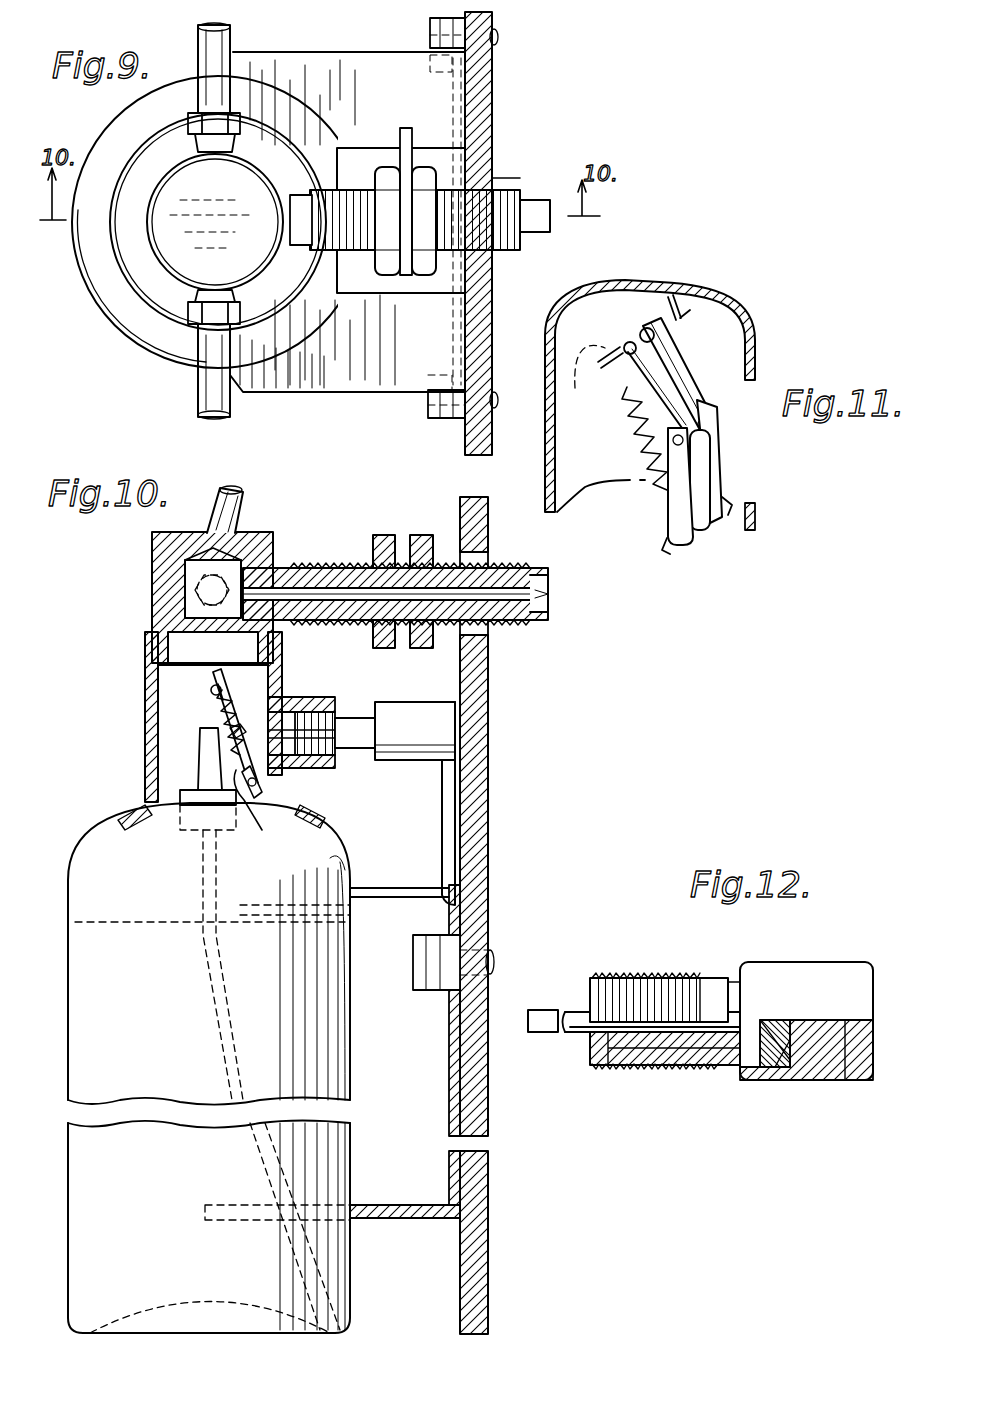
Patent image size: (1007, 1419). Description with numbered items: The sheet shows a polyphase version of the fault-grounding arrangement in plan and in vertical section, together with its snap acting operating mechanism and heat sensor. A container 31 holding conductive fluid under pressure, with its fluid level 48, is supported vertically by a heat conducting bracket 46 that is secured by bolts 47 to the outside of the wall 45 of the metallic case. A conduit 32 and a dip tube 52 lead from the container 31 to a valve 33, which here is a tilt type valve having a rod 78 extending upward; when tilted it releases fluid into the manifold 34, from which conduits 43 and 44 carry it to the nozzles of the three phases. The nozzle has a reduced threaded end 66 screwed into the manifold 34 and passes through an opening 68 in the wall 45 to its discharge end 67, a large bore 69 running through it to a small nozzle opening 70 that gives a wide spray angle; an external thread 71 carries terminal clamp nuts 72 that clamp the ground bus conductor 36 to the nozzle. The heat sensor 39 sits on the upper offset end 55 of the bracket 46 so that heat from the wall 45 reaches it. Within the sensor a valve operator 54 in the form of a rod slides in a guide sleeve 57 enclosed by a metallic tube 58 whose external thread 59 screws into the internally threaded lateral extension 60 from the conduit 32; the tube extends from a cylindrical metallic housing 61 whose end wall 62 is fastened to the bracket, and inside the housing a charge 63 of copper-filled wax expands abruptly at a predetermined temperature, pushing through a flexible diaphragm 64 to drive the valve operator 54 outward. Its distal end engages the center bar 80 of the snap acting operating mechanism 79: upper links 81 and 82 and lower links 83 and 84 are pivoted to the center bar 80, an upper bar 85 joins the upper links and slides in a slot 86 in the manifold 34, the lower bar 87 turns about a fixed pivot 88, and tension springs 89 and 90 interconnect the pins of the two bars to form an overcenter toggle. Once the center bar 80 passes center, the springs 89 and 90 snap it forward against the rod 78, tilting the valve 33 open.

In FIG. 9, the container 31 is at (108, 322).
In FIG. 10, the container 31 is at (142, 1224).
In FIG. 10, the conduit 32 is at (145, 764).
In FIG. 10, the valve 33 is at (172, 736).
In FIG. 9, the manifold 34 is at (212, 202).
In FIG. 10, the manifold 34 is at (152, 565).
In FIG. 9, the ground bus conductor 36 is at (406, 155).
In FIG. 10, the ground bus conductor 36 is at (400, 648).
In FIG. 10, the heat sensor 39 is at (350, 684).
In FIG. 12, the heat sensor 39 is at (656, 944).
In FIG. 9, the conduit 43 is at (198, 384).
In FIG. 9, the conduit 44 is at (232, 38).
In FIG. 10, the conduit 44 is at (237, 502).
In FIG. 9, the wall 45 is at (492, 82).
In FIG. 10, the wall 45 is at (488, 768).
In FIG. 9, the bracket 46 is at (368, 370).
In FIG. 10, the bracket 46 is at (382, 903).
In FIG. 9, the bolts 47 is at (430, 26).
In FIG. 10, the bolts 47 is at (418, 990).
In FIG. 10, the fluid level 48 is at (138, 918).
In FIG. 10, the dip tube 52 is at (290, 1145).
In FIG. 10, the valve operator 54 is at (286, 705).
In FIG. 12, the valve operator 54 is at (545, 1032).
In FIG. 10, the upper offset end 55 is at (442, 830).
In FIG. 12, the guide sleeve 57 is at (725, 1062).
In FIG. 10, the metallic tube 58 is at (356, 752).
In FIG. 12, the metallic tube 58 is at (678, 978).
In FIG. 10, the external thread 59 is at (352, 715).
In FIG. 12, the external thread 59 is at (640, 1067).
In FIG. 9, the lateral extension 60 is at (292, 188).
In FIG. 10, the lateral extension 60 is at (314, 770).
In FIG. 10, the cylindrical metallic housing 61 is at (420, 730).
In FIG. 12, the cylindrical metallic housing 61 is at (842, 1080).
In FIG. 12, the end wall 62 is at (873, 1068).
In FIG. 12, the charge 63 is at (800, 1072).
In FIG. 12, the flexible diaphragm 64 is at (778, 1022).
In FIG. 9, the reduced threaded end 66 is at (290, 204).
In FIG. 10, the reduced threaded end 66 is at (290, 568).
In FIG. 9, the discharge end 67 is at (532, 200).
In FIG. 10, the discharge end 67 is at (540, 620).
In FIG. 9, the opening 68 is at (500, 178).
In FIG. 10, the opening 68 is at (488, 566).
In FIG. 10, the bore 69 is at (460, 556).
In FIG. 10, the nozzle opening 70 is at (550, 600).
In FIG. 10, the external thread 71 is at (312, 570).
In FIG. 9, the terminal clamp nuts 72 is at (425, 272).
In FIG. 10, the terminal clamp nuts 72 is at (420, 535).
In FIG. 10, the rod 78 is at (200, 770).
In FIG. 11, the snap acting operating mechanism 79 is at (772, 322).
In FIG. 10, the snap acting operating mechanism 79 is at (282, 680).
In FIG. 11, the center bar 80 is at (708, 408).
In FIG. 10, the center bar 80 is at (232, 712).
In FIG. 11, the upper link 81 is at (690, 390).
In FIG. 11, the upper link 82 is at (655, 405).
In FIG. 10, the upper link 82 is at (216, 696).
In FIG. 11, the lower link 83 is at (712, 444).
In FIG. 11, the lower link 84 is at (682, 474).
In FIG. 10, the lower link 84 is at (238, 800).
In FIG. 11, the upper bar 85 is at (645, 328).
In FIG. 10, the upper bar 85 is at (215, 680).
In FIG. 11, the slot 86 is at (684, 302).
In FIG. 11, the lower bar 87 is at (705, 528).
In FIG. 10, the lower bar 87 is at (268, 812).
In FIG. 11, the fixed pivot 88 is at (755, 512).
In FIG. 10, the fixed pivot 88 is at (255, 784).
In FIG. 11, the tension spring 89 is at (678, 340).
In FIG. 11, the tension spring 90 is at (640, 450).
In FIG. 10, the tension spring 90 is at (222, 718).